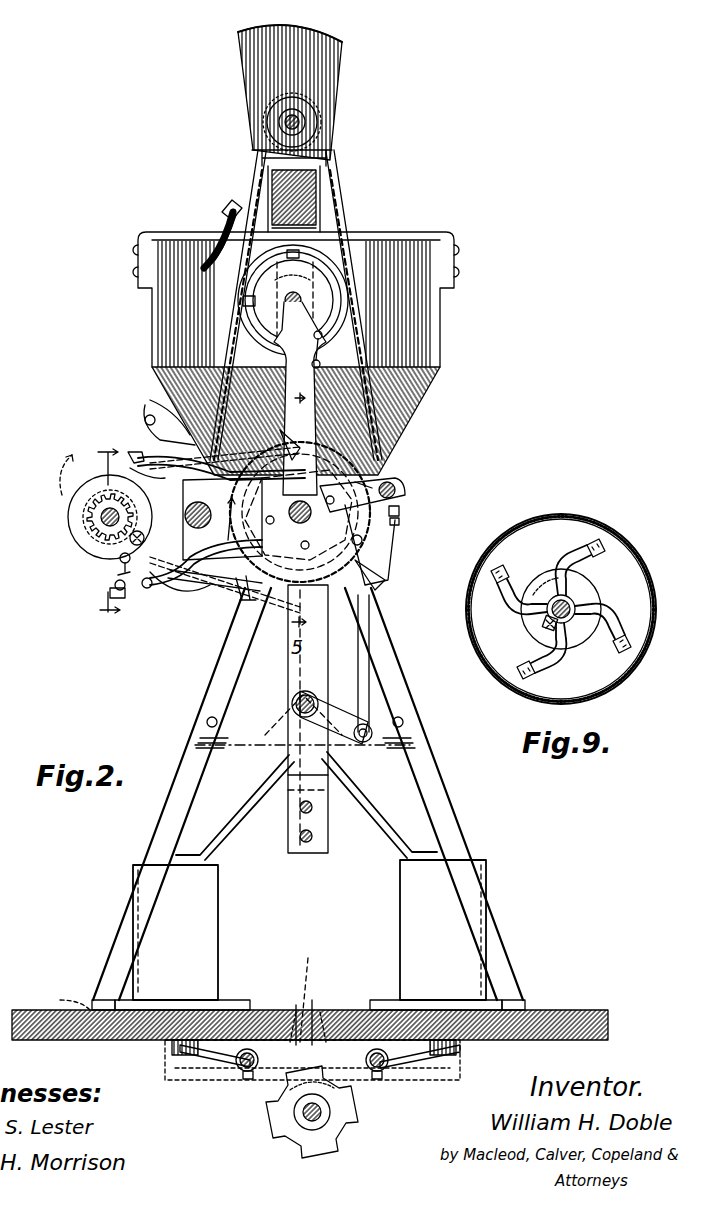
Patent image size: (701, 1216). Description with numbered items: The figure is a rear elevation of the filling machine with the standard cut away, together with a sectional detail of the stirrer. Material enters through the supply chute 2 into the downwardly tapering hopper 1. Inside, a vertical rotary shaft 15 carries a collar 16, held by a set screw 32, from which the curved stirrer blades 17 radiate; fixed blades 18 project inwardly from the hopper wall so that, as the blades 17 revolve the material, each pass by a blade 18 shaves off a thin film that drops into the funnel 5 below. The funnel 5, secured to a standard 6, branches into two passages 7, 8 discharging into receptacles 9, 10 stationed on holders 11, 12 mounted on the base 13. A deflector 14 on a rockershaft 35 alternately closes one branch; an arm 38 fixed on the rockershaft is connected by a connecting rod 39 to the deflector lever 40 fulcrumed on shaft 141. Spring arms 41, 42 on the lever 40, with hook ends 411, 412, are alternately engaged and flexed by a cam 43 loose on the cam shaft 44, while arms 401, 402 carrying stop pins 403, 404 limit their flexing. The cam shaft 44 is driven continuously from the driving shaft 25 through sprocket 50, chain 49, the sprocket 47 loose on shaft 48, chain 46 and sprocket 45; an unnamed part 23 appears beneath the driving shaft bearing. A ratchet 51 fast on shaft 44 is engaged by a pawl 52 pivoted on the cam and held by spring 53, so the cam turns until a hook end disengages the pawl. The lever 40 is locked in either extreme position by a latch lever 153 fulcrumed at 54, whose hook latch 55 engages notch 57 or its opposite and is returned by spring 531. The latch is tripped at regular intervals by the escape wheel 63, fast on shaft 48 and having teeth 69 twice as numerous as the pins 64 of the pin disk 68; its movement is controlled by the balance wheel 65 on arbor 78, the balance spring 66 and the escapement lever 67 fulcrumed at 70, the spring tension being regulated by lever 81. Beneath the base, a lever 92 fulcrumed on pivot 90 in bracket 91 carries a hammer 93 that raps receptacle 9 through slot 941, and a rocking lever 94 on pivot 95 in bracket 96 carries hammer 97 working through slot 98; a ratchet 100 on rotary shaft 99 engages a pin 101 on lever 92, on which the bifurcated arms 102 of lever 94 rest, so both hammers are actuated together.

In FIG. 2, the hopper 1 is at (172, 292).
In FIG. 9, the hopper 1 is at (615, 552).
In FIG. 2, the supply chute 2 is at (250, 68).
In FIG. 2, the funnel 5 is at (300, 398).
In FIG. 2, the standard 6 is at (109, 536).
In FIG. 2, the branch passage 7 is at (215, 812).
In FIG. 2, the branch passage 8 is at (385, 803).
In FIG. 2, the receptacle 9 is at (202, 893).
In FIG. 2, the receptacle 10 is at (417, 883).
In FIG. 2, the holder 11 is at (233, 1000).
In FIG. 2, the holder 12 is at (387, 1000).
In FIG. 2, the base 13 is at (311, 988).
In FIG. 2, the deflector 14 is at (325, 650).
In FIG. 9, the rotary shaft 15 is at (571, 620).
In FIG. 9, the collar 16 is at (572, 598).
In FIG. 9, the stirrer blades 17 is at (548, 567).
In FIG. 9, the fixed blades 18 is at (588, 543).
In FIG. 2, the bracket 23 is at (258, 158).
In FIG. 2, the driving shaft 25 is at (338, 95).
In FIG. 9, the set screw 32 is at (545, 625).
In FIG. 2, the rockershaft 35 is at (292, 708).
In FIG. 2, the arm 38 is at (343, 737).
In FIG. 2, the connecting rod 39 is at (362, 673).
In FIG. 2, the deflector lever 40 is at (375, 558).
In FIG. 2, the spring arm 41 is at (147, 590).
In FIG. 2, the spring arm 42 is at (143, 457).
In FIG. 2, the cam 43 is at (85, 552).
In FIG. 2, the cam shaft 44 is at (105, 518).
In FIG. 2, the sprocket 45 is at (62, 478).
In FIG. 2, the chain 46 is at (200, 587).
In FIG. 2, the sprocket 47 is at (255, 577).
In FIG. 2, the shaft 48 is at (320, 488).
In FIG. 2, the chain 49 is at (245, 330).
In FIG. 2, the sprocket 50 is at (315, 127).
In FIG. 2, the ratchet 51 is at (88, 503).
In FIG. 2, the pawl 52 is at (143, 533).
In FIG. 2, the spring 53 is at (120, 560).
In FIG. 2, the fulcrum 54 is at (400, 490).
In FIG. 2, the hook latch 55 is at (397, 523).
In FIG. 2, the notch 57 is at (368, 585).
In FIG. 2, the escape wheel 63 is at (362, 541).
In FIG. 2, the pins 64 is at (330, 507).
In FIG. 2, the balance wheel 65 is at (325, 268).
In FIG. 2, the balance spring 66 is at (365, 290).
In FIG. 2, the escapement lever 67 is at (310, 370).
In FIG. 2, the pin disk 68 is at (323, 295).
In FIG. 2, the teeth 69 is at (282, 600).
In FIG. 2, the fulcrum 70 is at (285, 430).
In FIG. 2, the arbor 78 is at (310, 300).
In FIG. 2, the lever 81 is at (226, 212).
In FIG. 2, the pivot 90 is at (247, 1071).
In FIG. 2, the bracket 91 is at (247, 1079).
In FIG. 2, the rocking lever 92 is at (207, 1060).
In FIG. 2, the hammer 93 is at (187, 1047).
In FIG. 2, the rocking lever 94 is at (415, 1057).
In FIG. 2, the pivot 95 is at (380, 1071).
In FIG. 2, the bracket 96 is at (377, 1079).
In FIG. 2, the hammer 97 is at (457, 1043).
In FIG. 2, the slot 98 is at (540, 1003).
In FIG. 2, the rotary shaft 99 is at (303, 1117).
In FIG. 2, the ratchet 100 is at (300, 1143).
In FIG. 2, the pin 101 is at (320, 1037).
In FIG. 2, the arms 102 is at (295, 1037).
In FIG. 2, the shaft 141 is at (204, 519).
In FIG. 2, the latch lever 153 is at (399, 510).
In FIG. 2, the arm 401 is at (157, 590).
In FIG. 2, the arm 402 is at (147, 417).
In FIG. 2, the stop pin 403 is at (112, 594).
In FIG. 2, the stop pin 404 is at (133, 452).
In FIG. 2, the hook end 411 is at (117, 582).
In FIG. 2, the hook end 412 is at (130, 455).
In FIG. 2, the spring 531 is at (372, 486).
In FIG. 2, the slot 941 is at (66, 999).